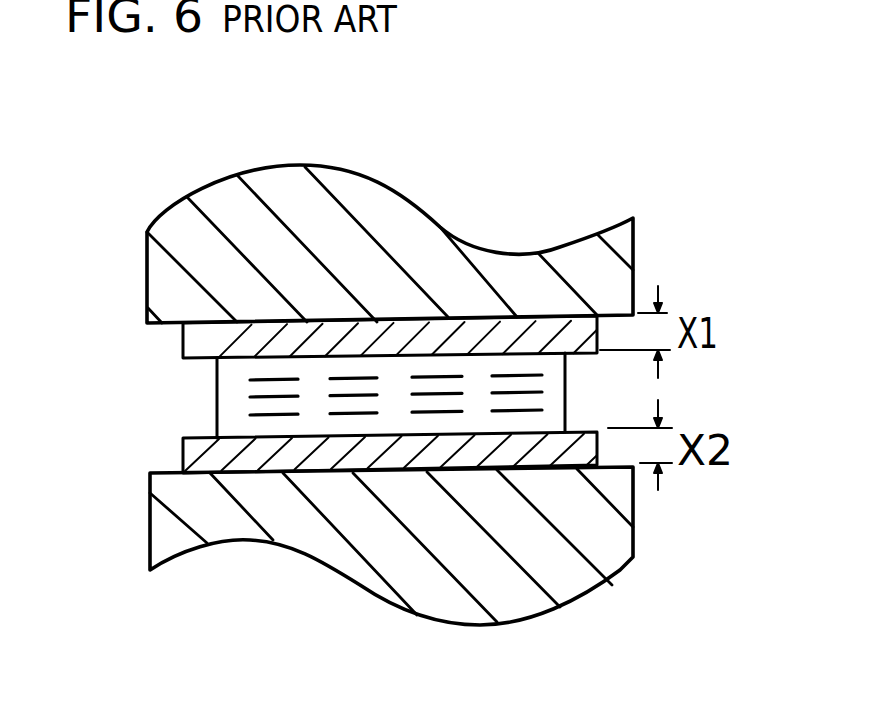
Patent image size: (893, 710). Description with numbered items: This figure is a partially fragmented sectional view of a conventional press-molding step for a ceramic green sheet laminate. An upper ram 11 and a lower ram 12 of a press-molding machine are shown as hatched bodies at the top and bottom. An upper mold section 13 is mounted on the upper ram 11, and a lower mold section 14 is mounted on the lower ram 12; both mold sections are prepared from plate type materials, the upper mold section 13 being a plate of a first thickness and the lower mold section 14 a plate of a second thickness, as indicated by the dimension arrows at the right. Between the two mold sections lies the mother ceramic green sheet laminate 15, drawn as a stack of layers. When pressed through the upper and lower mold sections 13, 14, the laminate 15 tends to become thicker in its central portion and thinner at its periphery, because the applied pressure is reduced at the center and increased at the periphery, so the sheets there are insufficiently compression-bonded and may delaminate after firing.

The upper ram 11 is at (518, 266).
The lower ram 12 is at (588, 530).
The upper mold section 13 is at (537, 333).
The lower mold section 14 is at (535, 457).
The mother ceramic green sheet laminate 15 is at (552, 397).